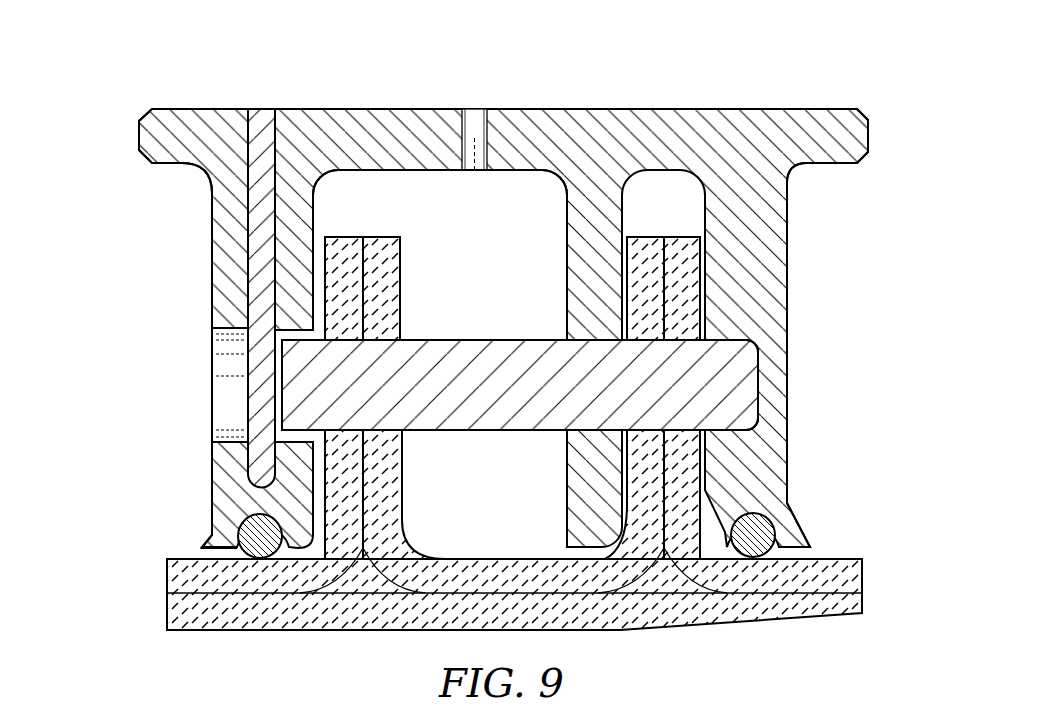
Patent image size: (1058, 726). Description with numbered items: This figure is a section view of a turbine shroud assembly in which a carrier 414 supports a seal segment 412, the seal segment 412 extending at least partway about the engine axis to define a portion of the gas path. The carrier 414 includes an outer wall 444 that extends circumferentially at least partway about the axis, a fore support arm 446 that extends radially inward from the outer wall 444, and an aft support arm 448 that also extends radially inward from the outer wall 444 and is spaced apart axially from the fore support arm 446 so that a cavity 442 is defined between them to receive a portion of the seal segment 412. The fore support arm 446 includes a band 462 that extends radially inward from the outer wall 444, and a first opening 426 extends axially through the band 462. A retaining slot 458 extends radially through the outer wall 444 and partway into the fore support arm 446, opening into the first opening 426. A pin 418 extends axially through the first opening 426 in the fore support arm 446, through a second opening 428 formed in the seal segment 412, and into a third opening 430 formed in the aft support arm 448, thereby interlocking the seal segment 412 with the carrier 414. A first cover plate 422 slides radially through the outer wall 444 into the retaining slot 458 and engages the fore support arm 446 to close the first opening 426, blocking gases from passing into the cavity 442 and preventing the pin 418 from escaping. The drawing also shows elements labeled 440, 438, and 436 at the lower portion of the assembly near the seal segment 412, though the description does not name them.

The carrier 414 is at (606, 95).
The outer wall 444 is at (383, 106).
The retaining slot 458 is at (262, 106).
The cavity 442 is at (508, 203).
The aft support arm 448 is at (832, 243).
The band 462 is at (208, 227).
The fore support arm 446 is at (103, 338).
The first opening 426 is at (225, 352).
The first cover plate 422 is at (240, 412).
The pin 418 is at (423, 440).
The second opening 428 is at (388, 393).
The third opening 430 is at (728, 390).
The elastomeric seal 440 is at (707, 480).
The seal leg 438 is at (408, 527).
The seal segment 412 is at (873, 537).
The base plate 436 is at (873, 588).